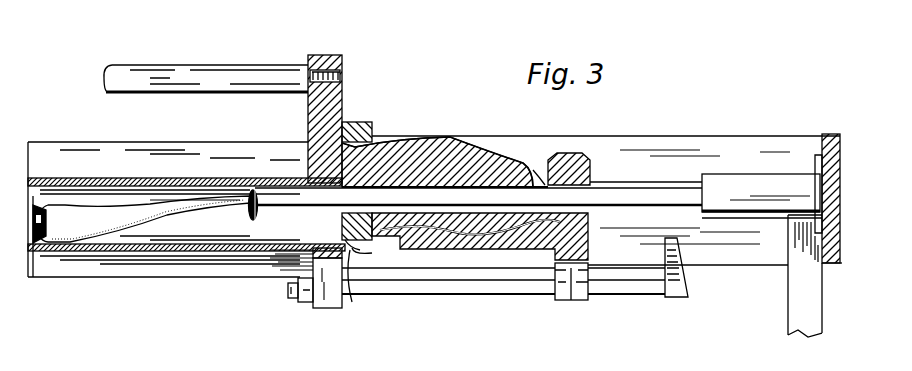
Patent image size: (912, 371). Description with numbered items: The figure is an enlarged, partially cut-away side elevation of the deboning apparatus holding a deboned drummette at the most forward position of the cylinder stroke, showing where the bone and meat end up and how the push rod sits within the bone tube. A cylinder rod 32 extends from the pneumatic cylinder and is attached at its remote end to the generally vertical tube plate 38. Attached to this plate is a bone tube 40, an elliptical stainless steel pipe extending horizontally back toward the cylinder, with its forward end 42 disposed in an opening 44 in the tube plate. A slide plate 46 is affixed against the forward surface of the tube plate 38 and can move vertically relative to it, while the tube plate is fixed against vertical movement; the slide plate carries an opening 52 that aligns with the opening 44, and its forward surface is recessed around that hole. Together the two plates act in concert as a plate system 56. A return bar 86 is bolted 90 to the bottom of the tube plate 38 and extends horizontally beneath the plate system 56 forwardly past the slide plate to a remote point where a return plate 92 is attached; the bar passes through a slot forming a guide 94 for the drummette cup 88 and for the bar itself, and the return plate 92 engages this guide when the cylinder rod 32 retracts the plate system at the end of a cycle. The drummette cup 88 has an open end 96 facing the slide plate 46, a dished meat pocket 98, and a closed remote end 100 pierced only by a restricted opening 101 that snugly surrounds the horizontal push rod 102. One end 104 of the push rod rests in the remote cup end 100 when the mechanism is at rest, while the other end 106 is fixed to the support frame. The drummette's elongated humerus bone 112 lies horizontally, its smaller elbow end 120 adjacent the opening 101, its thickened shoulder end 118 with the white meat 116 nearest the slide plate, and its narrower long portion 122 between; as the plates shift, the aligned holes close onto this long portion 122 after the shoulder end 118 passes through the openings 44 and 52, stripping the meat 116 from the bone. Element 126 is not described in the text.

The cylinder rod 32 is at (190, 68).
The tube plate 38 is at (323, 309).
The bone tube 40 is at (62, 180).
The forward end of bone tube 42 is at (448, 288).
The opening in tube plate 44 is at (358, 246).
The slide plate 46 is at (366, 122).
The opening in slide plate 52 is at (380, 150).
The plate system 56 is at (351, 59).
The return bar 86 is at (519, 286).
The drummette cup 88 is at (560, 153).
The bolt 90 is at (291, 300).
The return plate 92 is at (677, 297).
The guide 94 is at (575, 300).
The open end of drummette cup 96 is at (424, 250).
The meat pocket 98 is at (533, 176).
The remote end of drummette cup 100 is at (591, 170).
The restricted opening 101 is at (592, 180).
The push rod 102 is at (676, 186).
The end of push rod 104 is at (250, 178).
The other end of push rod 106 is at (838, 166).
The humerus bone 112 is at (110, 228).
The white meat 116 is at (453, 140).
The shoulder end 118 is at (80, 248).
The elbow end 120 is at (248, 215).
The long portion of bone 122 is at (187, 217).
The latch 126 is at (31, 252).